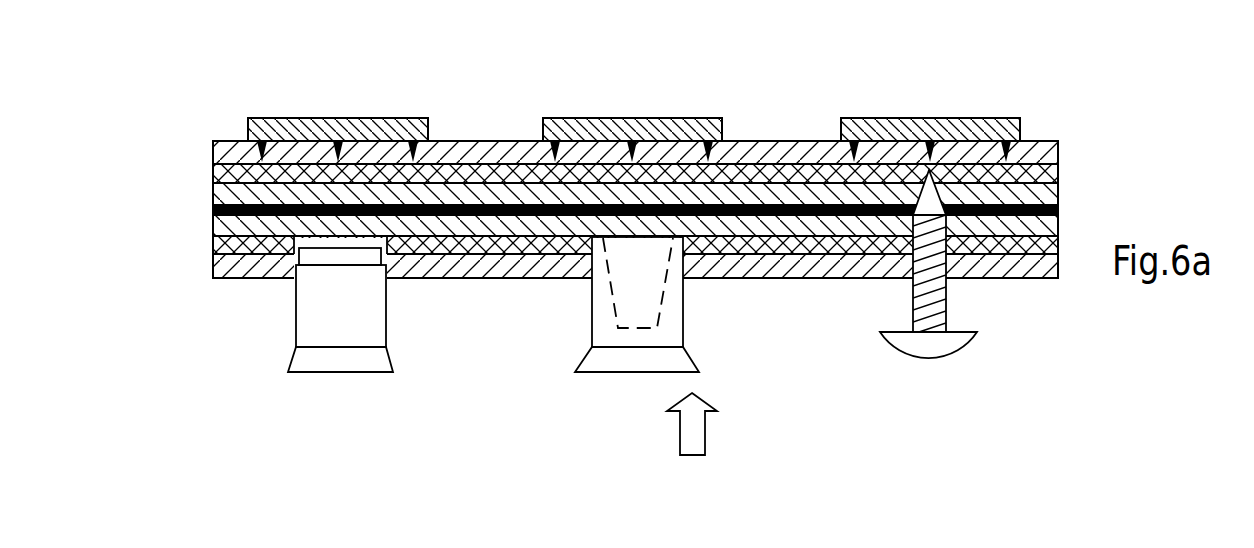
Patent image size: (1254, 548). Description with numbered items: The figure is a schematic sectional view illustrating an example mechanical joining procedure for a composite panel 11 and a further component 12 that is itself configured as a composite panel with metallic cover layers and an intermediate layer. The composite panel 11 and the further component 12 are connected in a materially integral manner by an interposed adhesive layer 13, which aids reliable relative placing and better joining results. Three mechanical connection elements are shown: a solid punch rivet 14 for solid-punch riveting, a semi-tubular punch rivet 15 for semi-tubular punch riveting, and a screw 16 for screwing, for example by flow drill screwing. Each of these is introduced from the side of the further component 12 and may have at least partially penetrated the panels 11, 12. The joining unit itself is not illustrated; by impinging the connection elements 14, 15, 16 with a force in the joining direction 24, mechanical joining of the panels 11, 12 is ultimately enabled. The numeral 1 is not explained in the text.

The attached component 1 is at (382, 127).
The composite panel 11 is at (188, 142).
The further component 12 is at (188, 267).
The adhesive layer 13 is at (213, 208).
The solid punch rivet 14 is at (256, 384).
The semi-tubular punch rivet 15 is at (545, 383).
The screw 16 is at (905, 372).
The joining direction 24 is at (698, 432).